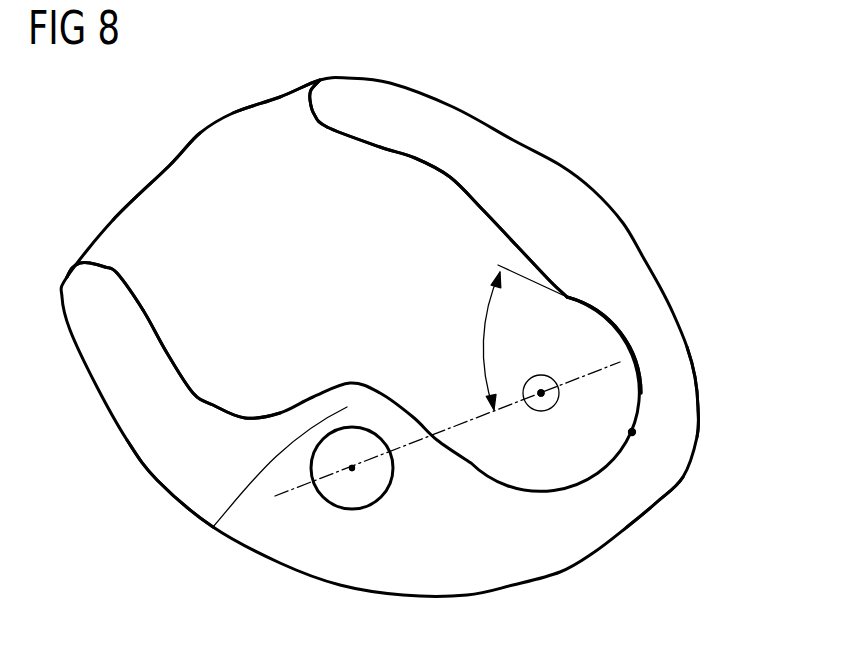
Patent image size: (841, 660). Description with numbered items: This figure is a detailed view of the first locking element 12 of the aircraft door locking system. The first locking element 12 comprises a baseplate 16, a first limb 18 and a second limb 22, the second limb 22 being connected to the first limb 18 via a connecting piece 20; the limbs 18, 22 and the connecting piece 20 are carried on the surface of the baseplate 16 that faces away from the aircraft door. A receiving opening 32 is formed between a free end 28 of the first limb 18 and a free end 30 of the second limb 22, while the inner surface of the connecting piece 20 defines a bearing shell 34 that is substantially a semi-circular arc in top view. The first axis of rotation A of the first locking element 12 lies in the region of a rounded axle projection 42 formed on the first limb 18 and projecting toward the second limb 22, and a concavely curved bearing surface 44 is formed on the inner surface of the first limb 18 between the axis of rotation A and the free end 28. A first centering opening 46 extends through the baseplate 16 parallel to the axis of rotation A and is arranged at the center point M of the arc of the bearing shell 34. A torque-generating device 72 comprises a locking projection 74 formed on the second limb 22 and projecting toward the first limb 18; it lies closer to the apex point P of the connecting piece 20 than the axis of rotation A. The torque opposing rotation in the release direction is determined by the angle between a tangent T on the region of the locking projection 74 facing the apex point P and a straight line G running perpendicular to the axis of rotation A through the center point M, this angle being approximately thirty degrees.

The first locking element 12 is at (584, 114).
The baseplate 16 is at (278, 104).
The first limb 18 is at (157, 470).
The connecting piece 20 is at (654, 500).
The second limb 22 is at (423, 140).
The free end of the first limb 28 is at (78, 291).
The free end of the second limb 30 is at (327, 97).
The receiving opening 32 is at (178, 172).
The bearing shell 34 is at (640, 388).
The rounded axle projection 42 is at (213, 528).
The concavely curved bearing surface 44 is at (176, 396).
The first centering opening 46 is at (558, 398).
The torque-generating device 72 is at (630, 274).
The locking projection 74 is at (575, 288).
The tangent T is at (530, 272).
The apex point P is at (634, 434).
The first axis of rotation A is at (352, 471).
The straight line G is at (417, 443).
The center point M is at (544, 398).